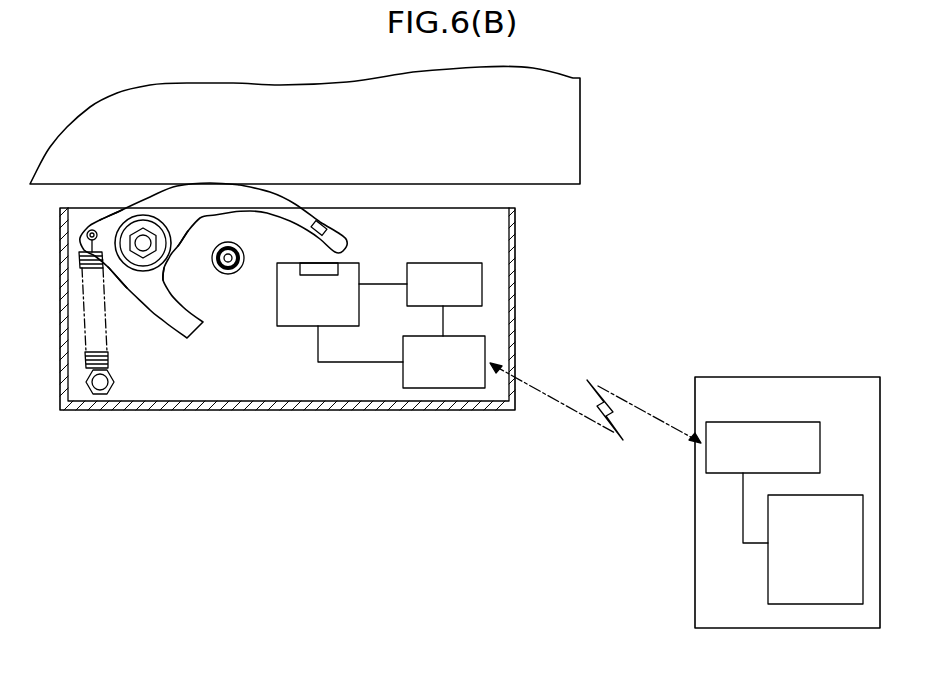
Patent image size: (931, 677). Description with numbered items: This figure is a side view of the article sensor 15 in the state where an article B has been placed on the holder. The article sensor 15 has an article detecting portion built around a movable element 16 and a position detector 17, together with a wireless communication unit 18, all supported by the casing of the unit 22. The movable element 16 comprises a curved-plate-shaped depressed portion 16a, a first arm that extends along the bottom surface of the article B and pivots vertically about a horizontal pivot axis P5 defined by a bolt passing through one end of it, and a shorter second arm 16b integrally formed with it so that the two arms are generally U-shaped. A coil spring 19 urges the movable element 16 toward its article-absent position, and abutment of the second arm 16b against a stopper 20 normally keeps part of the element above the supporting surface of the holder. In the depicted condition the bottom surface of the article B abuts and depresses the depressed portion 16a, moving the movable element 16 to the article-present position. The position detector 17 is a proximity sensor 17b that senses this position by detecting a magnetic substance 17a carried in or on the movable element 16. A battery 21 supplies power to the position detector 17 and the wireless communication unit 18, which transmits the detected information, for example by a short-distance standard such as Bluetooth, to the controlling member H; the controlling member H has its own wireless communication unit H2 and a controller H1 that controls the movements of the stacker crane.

The article B is at (563, 137).
The article sensor 15 is at (333, 334).
The movable element 16 is at (213, 285).
The depressed portion 16a is at (220, 184).
The second arm 16b is at (190, 327).
The position detector 17 is at (327, 267).
The detected element on lever 17a is at (319, 222).
The proximity sensor 17b is at (318, 263).
The wireless communication unit 18 is at (473, 347).
The coil spring 19 is at (107, 337).
The stopper 20 is at (230, 276).
The battery 21 is at (453, 275).
The unit 22 is at (515, 232).
The horizontal pivot axis P5 is at (143, 243).
The controlling member H is at (746, 459).
The controller H1 is at (783, 582).
The wireless communication unit H2 is at (706, 465).